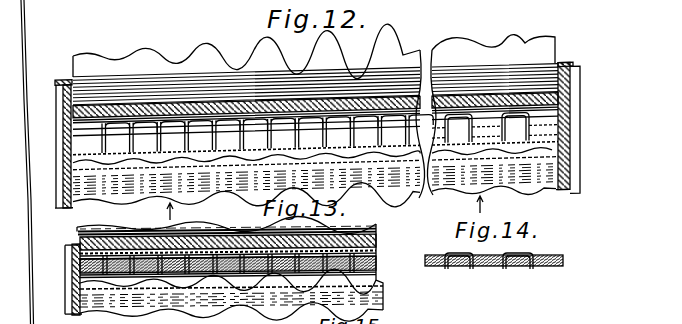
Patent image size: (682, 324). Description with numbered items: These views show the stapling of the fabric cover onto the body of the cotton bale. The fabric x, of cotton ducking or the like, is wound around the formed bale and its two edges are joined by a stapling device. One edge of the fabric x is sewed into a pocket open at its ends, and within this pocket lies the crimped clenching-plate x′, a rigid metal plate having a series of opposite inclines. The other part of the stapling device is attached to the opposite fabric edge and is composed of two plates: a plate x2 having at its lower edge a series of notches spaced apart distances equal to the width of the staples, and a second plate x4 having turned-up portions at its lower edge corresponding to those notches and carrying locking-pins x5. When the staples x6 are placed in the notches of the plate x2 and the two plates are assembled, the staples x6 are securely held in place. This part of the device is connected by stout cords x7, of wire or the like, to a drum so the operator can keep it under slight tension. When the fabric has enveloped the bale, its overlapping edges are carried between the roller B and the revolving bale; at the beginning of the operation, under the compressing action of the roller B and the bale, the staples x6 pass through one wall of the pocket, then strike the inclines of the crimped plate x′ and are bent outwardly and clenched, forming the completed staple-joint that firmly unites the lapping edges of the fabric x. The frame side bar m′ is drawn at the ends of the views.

In FIG. 12, the frame side bar m′ is at (56, 84).
In FIG. 13, the frame side bar m′ is at (65, 292).
In FIG. 12, the fabric x is at (85, 162).
In FIG. 13, the fabric x is at (374, 275).
In FIG. 14, the fabric x is at (482, 270).
In FIG. 13, the crimped clenching-plate x′ is at (122, 279).
In FIG. 12, the plate x2 is at (152, 133).
In FIG. 12, the plate x4 is at (131, 135).
In FIG. 12, the locking-pins x5 is at (83, 150).
In FIG. 12, the staples x6 is at (181, 124).
In FIG. 13, the staples x6 is at (376, 268).
In FIG. 14, the staples x6 is at (546, 251).
In FIG. 12, the cords x7 is at (431, 133).
In FIG. 12, the roller B is at (203, 106).
In FIG. 13, the roller B is at (228, 242).